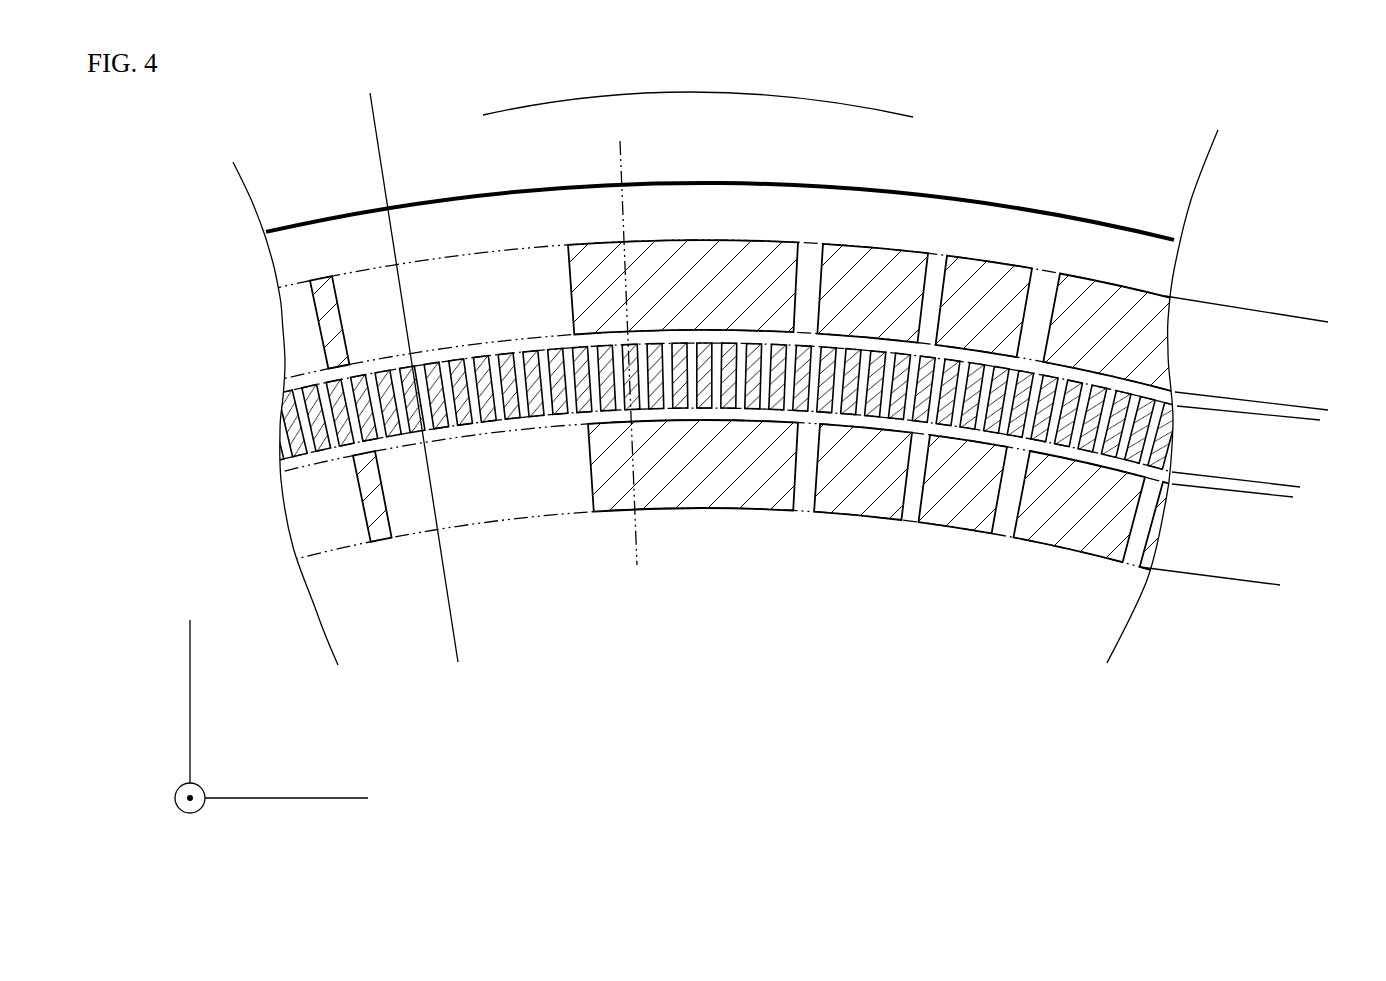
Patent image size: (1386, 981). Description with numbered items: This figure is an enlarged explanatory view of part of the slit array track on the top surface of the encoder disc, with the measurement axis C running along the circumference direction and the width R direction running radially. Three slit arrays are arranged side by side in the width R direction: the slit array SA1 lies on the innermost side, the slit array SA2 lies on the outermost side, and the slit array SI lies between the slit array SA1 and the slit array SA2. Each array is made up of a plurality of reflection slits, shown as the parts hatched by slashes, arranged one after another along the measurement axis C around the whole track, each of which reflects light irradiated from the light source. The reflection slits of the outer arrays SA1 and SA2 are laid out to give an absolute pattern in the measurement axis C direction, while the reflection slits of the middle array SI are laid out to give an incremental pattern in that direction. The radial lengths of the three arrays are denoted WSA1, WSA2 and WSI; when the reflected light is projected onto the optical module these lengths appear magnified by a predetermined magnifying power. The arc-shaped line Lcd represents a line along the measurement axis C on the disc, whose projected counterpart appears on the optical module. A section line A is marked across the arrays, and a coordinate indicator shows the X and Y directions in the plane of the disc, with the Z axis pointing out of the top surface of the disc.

The slit array SA2 is at (252, 314).
The slit array SI is at (240, 418).
The slit array SA1 is at (228, 523).
The line Lcd is at (495, 520).
The length of slit array SA2 in the width direction WSA2 is at (1252, 310).
The length of slit array SI in the width direction WSI is at (1240, 412).
The length of slit array SA1 in the width direction WSA1 is at (1227, 490).
The width direction R is at (379, 118).
The measurement axis C is at (885, 102).
The section line A- A is at (705, 572).
The X axis X is at (343, 788).
The Y axis Y is at (200, 647).
The Z axis Z is at (175, 798).